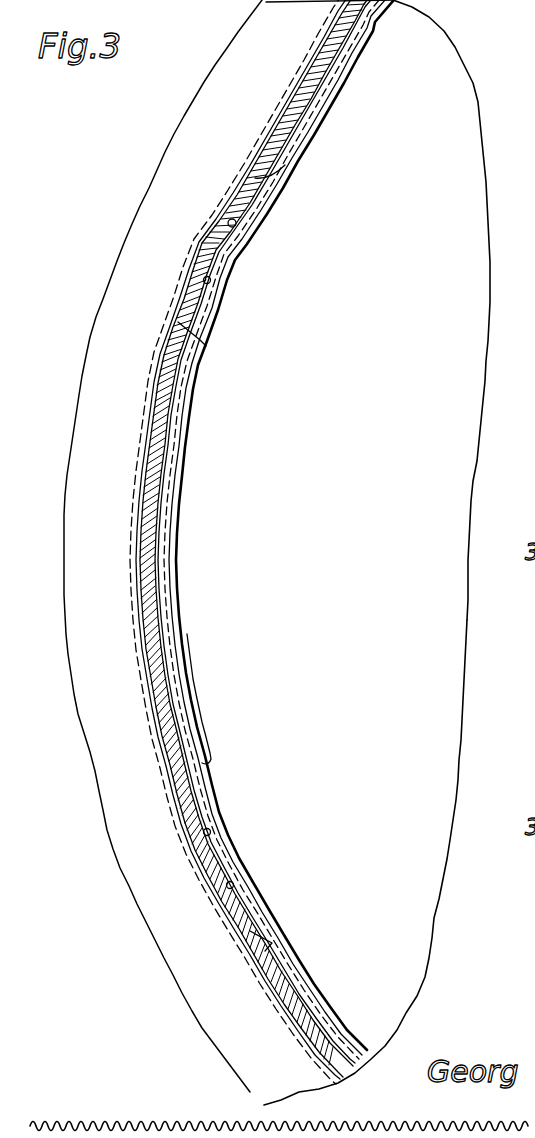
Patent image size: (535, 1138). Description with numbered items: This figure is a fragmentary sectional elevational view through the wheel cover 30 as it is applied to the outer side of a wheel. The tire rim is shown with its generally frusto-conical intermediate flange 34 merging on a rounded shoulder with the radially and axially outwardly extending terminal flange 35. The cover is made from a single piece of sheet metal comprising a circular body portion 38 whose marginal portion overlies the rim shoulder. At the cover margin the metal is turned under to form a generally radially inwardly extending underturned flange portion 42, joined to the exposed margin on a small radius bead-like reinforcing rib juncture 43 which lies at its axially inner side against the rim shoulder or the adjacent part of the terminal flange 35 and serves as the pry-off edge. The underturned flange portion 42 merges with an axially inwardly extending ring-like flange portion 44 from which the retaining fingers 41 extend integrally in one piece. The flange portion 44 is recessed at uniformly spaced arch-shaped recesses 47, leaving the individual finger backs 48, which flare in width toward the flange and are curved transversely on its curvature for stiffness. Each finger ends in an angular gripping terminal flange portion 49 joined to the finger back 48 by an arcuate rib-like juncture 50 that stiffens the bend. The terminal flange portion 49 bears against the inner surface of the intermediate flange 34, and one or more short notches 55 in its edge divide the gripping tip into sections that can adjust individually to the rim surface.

The wheel cover 30 is at (460, 750).
The intermediate flange 34 is at (170, 768).
The terminal flange 35 is at (98, 758).
The circular body portion 38 is at (459, 500).
The retaining fingers 41 is at (225, 297).
The underturned flange portion 42 is at (172, 692).
The reinforcing rib juncture 43 is at (242, 963).
The ring-like flange portion 44 is at (183, 442).
The recesses 47 is at (313, 118).
The finger backs 48 is at (297, 146).
The gripping terminal flange portion 49 is at (247, 202).
The rib-like juncture 50 is at (205, 344).
The notches 55 is at (210, 280).